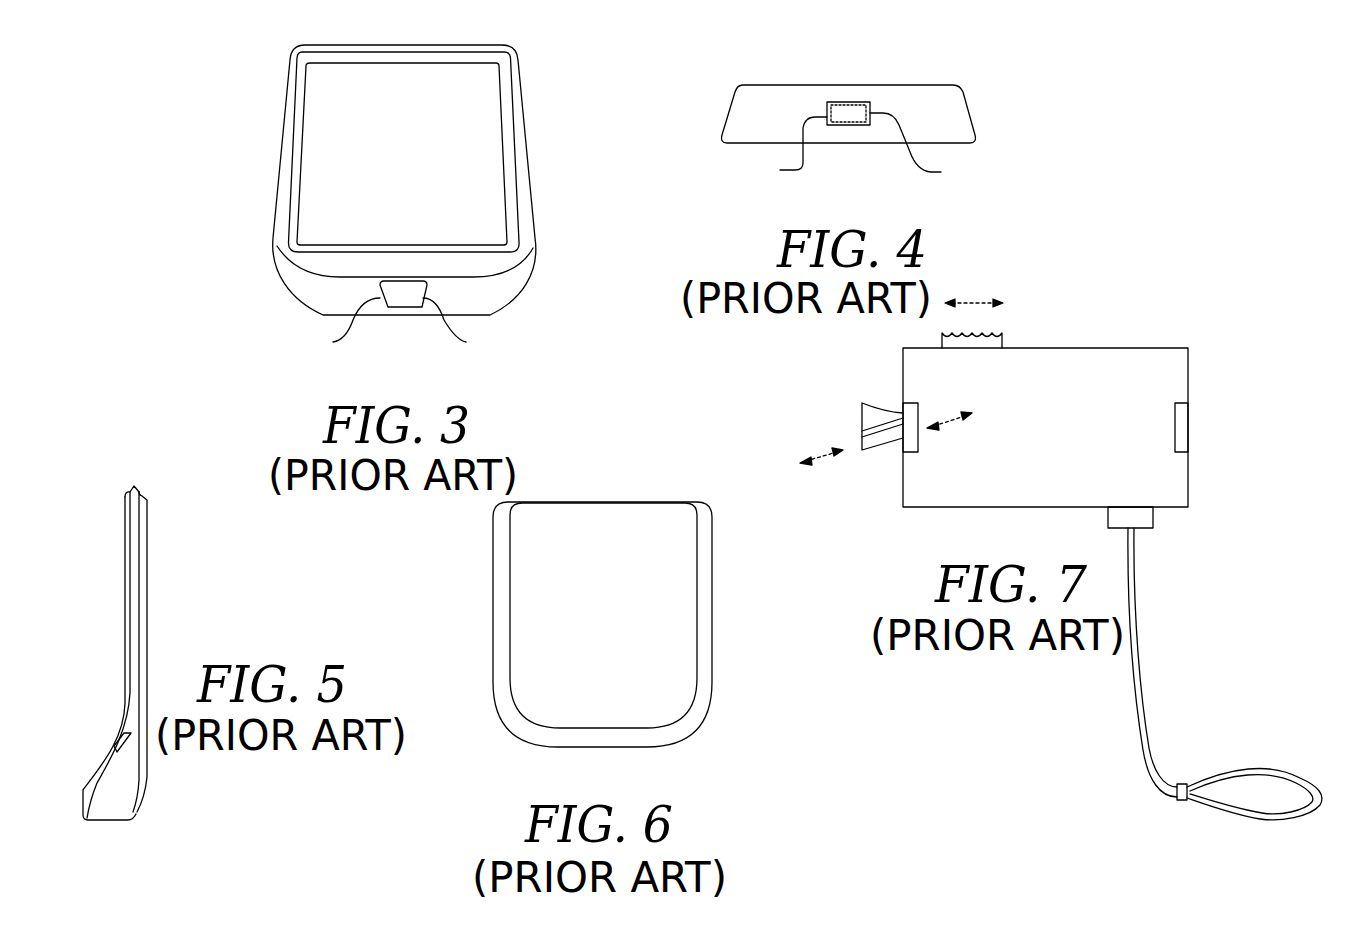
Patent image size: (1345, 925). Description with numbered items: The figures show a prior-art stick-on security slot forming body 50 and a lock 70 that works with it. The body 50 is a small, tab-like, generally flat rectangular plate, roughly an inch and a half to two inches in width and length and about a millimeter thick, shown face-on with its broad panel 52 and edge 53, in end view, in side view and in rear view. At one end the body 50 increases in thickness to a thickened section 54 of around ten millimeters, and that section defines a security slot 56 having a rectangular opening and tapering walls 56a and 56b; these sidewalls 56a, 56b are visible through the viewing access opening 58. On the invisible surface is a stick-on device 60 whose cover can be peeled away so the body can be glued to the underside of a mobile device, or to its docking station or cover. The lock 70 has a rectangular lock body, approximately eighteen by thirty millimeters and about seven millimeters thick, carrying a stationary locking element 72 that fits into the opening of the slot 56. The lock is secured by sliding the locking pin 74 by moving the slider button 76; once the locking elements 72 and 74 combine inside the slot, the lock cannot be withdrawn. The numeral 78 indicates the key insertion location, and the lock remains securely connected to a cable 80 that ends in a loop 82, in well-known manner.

In FIG. 3, the security slot forming body 50 is at (286, 92).
In FIG. 3, the display screen 52 is at (468, 83).
In FIG. 5, the display screen 52 is at (137, 490).
In FIG. 5, the screen housing edge 53 is at (148, 566).
In FIG. 3, the base 54 is at (313, 287).
In FIG. 4, the base 54 is at (927, 92).
In FIG. 4, the security slot 56 is at (852, 112).
In FIG. 3, the tapering wall 56a is at (468, 327).
In FIG. 4, the tapering wall 56a is at (928, 150).
In FIG. 3, the tapering wall 56b is at (332, 326).
In FIG. 4, the tapering wall 56b is at (779, 150).
In FIG. 3, the viewing access opening 58 is at (403, 308).
In FIG. 5, the stick-on device 60 is at (126, 612).
In FIG. 7, the lock 70 is at (1197, 310).
In FIG. 7, the stationary locking element 72 is at (862, 420).
In FIG. 7, the locking pin 74 is at (885, 444).
In FIG. 7, the slider button 76 is at (1002, 342).
In FIG. 7, the key insertion location 78 is at (1186, 420).
In FIG. 7, the cable 80 is at (1142, 643).
In FIG. 7, the loop 82 is at (1248, 790).